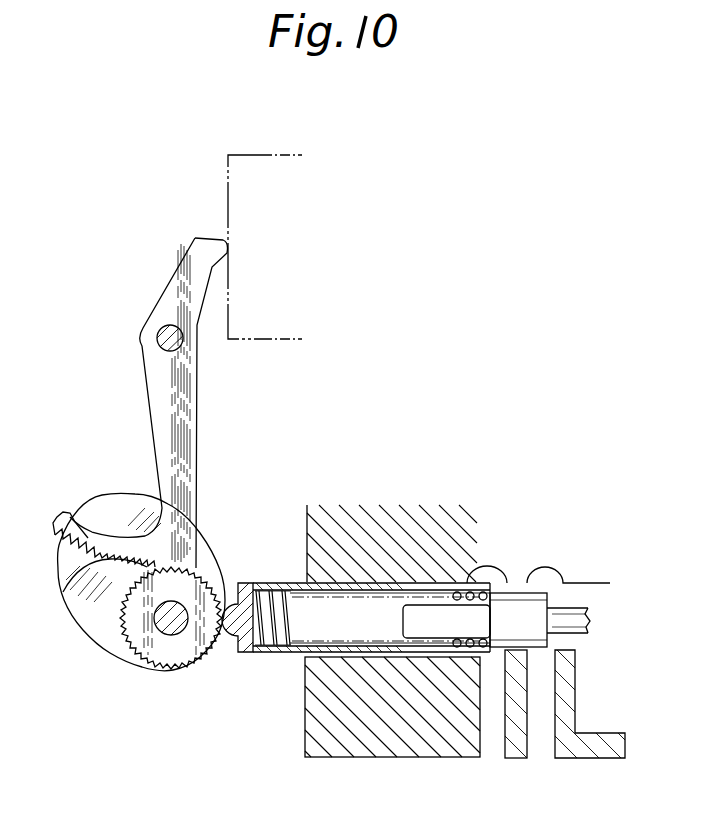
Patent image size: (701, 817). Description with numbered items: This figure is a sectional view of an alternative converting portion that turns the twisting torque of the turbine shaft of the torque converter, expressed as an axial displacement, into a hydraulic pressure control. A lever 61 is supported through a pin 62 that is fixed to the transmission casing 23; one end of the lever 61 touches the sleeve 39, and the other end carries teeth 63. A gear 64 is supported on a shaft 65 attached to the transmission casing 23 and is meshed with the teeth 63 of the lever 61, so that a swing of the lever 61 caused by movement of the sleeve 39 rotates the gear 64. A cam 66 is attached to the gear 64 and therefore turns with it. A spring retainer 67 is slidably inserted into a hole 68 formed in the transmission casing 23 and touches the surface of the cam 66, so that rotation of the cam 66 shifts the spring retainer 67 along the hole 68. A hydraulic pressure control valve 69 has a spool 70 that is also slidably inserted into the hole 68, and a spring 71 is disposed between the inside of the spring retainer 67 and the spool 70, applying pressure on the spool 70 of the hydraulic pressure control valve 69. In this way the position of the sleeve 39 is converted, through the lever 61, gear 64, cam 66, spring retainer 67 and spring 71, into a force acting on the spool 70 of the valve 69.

The transmission casing 23 is at (363, 528).
The sleeve 39 is at (258, 165).
The lever 61 is at (157, 423).
The pin 62 is at (176, 347).
The teeth 63 is at (77, 567).
The gear 64 is at (139, 656).
The shaft 65 is at (178, 626).
The cam 66 is at (205, 542).
The spring retainer 67 is at (245, 582).
The hole 68 is at (387, 586).
The hydraulic pressure control valve 69 is at (518, 600).
The spool 70 is at (572, 634).
The spring 71 is at (286, 619).